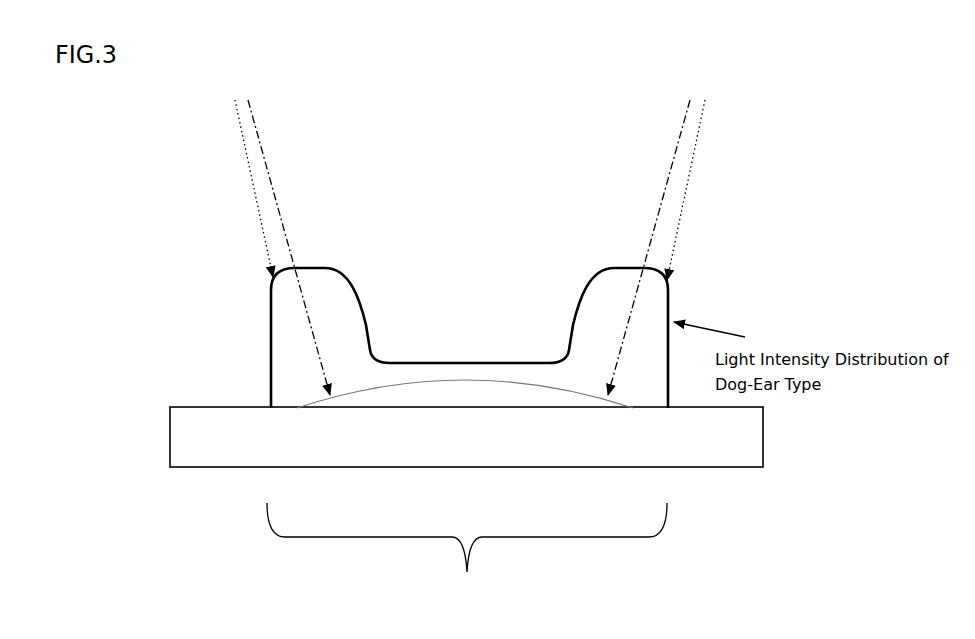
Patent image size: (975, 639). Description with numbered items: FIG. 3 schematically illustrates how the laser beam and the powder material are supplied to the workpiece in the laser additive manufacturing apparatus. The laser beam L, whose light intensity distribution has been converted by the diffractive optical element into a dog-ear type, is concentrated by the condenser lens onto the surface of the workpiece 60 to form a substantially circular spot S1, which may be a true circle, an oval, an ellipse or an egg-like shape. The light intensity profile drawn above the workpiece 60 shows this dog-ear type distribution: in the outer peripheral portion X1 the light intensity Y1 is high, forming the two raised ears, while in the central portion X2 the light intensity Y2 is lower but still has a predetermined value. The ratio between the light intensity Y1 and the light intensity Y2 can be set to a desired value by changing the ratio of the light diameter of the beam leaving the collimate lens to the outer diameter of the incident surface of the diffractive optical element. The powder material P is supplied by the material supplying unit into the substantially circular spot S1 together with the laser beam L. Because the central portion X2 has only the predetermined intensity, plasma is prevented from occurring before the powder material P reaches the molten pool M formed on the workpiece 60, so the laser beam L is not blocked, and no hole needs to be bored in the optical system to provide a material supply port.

The workpiece 60 is at (700, 443).
The substantially circular spot S1 is at (467, 556).
The molten pool M is at (480, 403).
The laser beam L is at (258, 213).
The powder material P is at (255, 157).
The outer peripheral portion X1 is at (318, 267).
The light intensity in the outer peripheral portion Y1 is at (318, 407).
The central portion X2 is at (502, 362).
The light intensity in the central portion Y2 is at (482, 407).